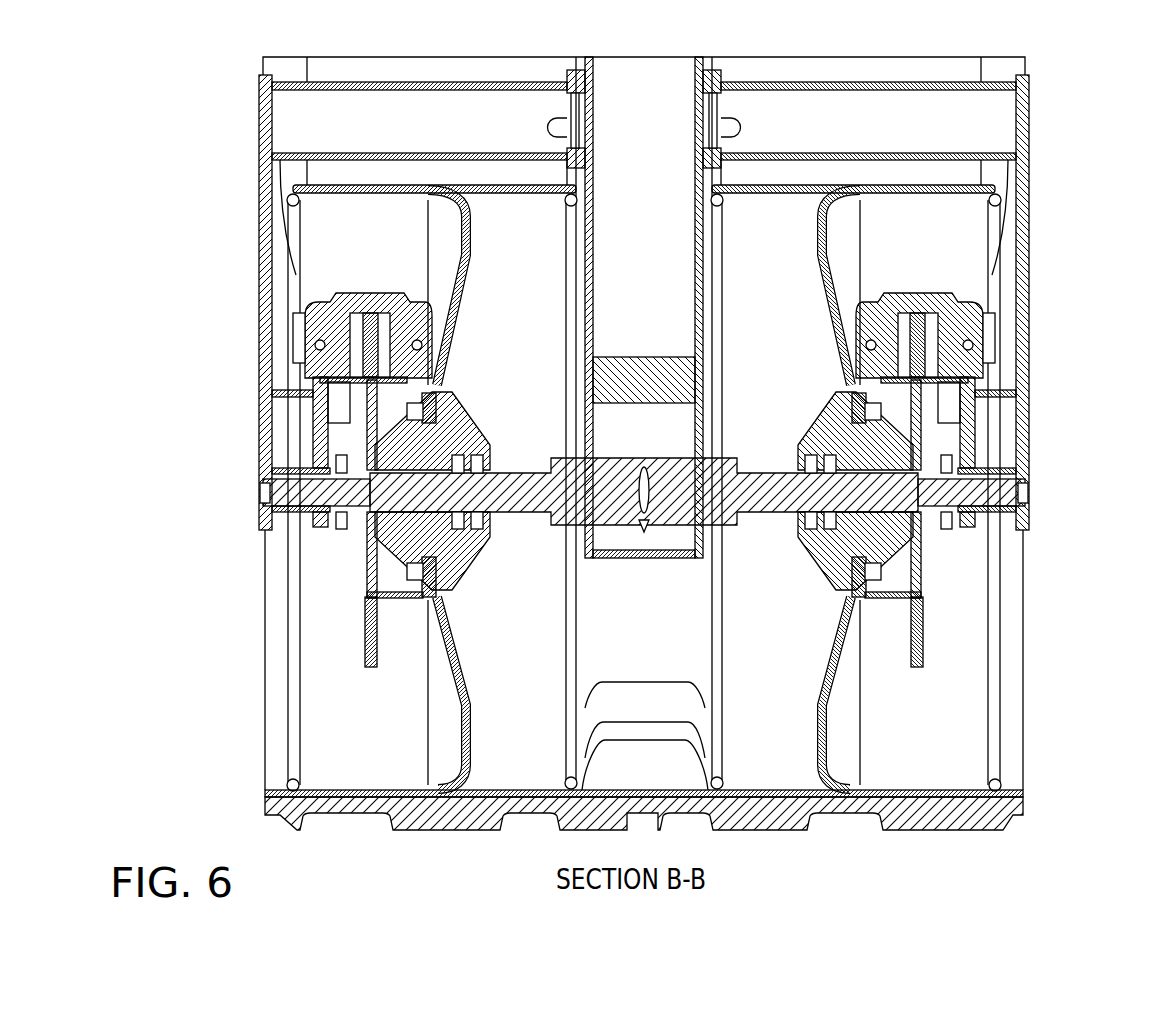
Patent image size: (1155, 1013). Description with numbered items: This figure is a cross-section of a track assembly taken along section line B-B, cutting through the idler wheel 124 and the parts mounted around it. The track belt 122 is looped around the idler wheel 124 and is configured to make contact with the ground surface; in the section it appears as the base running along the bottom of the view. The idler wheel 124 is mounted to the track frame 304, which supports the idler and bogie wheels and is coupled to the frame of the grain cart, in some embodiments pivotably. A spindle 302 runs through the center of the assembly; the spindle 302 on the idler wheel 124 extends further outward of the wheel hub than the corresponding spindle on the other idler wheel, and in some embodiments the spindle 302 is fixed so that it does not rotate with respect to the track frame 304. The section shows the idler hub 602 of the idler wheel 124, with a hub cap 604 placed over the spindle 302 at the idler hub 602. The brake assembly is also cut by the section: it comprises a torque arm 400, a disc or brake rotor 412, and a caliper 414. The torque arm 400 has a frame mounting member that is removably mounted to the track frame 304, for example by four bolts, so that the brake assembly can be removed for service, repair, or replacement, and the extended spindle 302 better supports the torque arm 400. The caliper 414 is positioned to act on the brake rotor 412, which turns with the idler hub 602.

The track belt 122 is at (444, 833).
The idler wheel 124 is at (293, 725).
The spindle 302 is at (644, 495).
The track frame 304 is at (694, 258).
The torque arm 400 is at (453, 79).
The brake rotor 412 is at (366, 390).
The caliper 414 is at (364, 290).
The idler hub 602 is at (456, 440).
The hub cap 604 is at (927, 445).